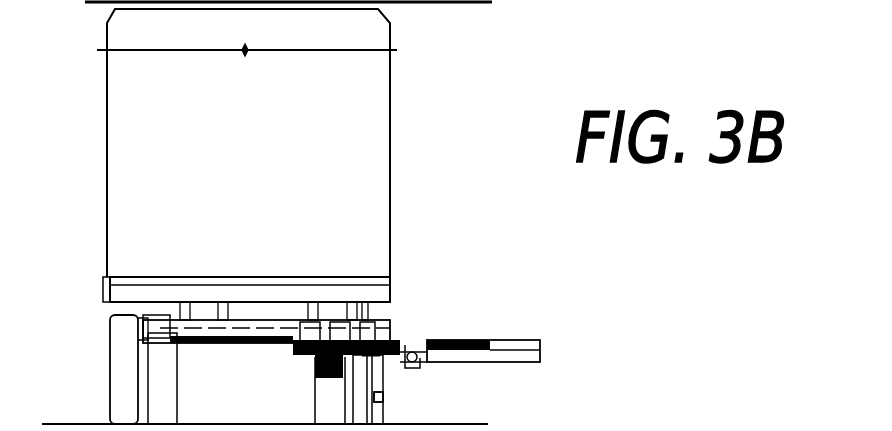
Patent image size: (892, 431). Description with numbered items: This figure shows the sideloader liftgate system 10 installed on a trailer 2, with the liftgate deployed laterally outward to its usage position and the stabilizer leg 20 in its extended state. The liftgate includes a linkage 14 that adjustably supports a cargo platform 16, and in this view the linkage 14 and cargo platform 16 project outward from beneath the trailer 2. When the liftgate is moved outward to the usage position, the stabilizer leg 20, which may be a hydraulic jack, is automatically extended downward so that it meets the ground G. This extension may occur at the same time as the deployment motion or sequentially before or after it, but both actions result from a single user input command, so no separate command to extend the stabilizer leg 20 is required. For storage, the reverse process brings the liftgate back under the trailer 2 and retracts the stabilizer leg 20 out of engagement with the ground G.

The trailer 2 is at (390, 115).
The sideloader liftgate system 10 is at (430, 310).
The linkage 14 is at (405, 368).
The cargo platform 16 is at (523, 338).
The stabilizer leg 20 is at (383, 398).
The ground G is at (74, 423).